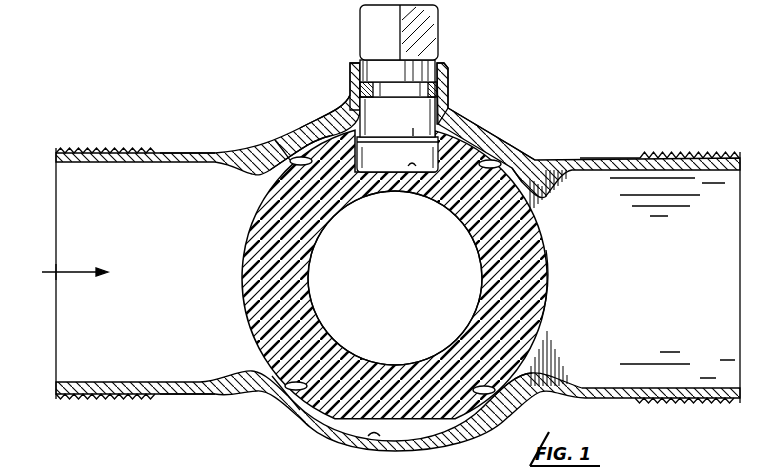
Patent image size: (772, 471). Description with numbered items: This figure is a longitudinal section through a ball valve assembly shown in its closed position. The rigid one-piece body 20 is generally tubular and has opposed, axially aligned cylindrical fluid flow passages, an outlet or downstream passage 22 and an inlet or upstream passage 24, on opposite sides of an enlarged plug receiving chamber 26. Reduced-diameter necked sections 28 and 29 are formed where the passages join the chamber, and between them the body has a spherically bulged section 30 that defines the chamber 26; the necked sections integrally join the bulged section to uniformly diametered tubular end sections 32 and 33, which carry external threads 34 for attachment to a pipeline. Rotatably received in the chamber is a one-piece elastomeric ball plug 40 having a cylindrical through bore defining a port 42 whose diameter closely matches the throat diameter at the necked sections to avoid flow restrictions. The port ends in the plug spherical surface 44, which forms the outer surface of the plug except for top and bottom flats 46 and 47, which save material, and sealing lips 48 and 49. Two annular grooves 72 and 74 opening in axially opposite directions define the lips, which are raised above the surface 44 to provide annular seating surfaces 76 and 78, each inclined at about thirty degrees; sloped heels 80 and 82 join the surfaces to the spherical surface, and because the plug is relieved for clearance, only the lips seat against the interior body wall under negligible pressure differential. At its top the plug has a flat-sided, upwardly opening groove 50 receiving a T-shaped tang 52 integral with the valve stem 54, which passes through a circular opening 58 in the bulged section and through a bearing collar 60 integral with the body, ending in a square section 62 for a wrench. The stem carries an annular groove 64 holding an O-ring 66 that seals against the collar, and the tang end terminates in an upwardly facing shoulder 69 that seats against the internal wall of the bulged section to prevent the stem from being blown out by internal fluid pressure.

The body 20 is at (161, 395).
The fluid flow passage 22 is at (630, 388).
The fluid flow passage 24 is at (56, 380).
The plug receiving cavity or chamber 26 is at (368, 438).
The necked section 28 is at (540, 160).
The necked section 29 is at (253, 150).
The spherically bulged section 30 is at (410, 448).
The tubular end section 32 is at (598, 158).
The tubular end section 33 is at (197, 150).
The external threads 34 is at (103, 147).
The ball plug 40 is at (552, 318).
The port 42 is at (333, 343).
The plug spherical surface 44 is at (549, 296).
The top flat 46 is at (458, 128).
The bottom flat 47 is at (450, 437).
The sealing lip 48 is at (545, 160).
The sealing lip 49 is at (292, 152).
The groove 50 is at (412, 168).
The tang 52 is at (372, 162).
The valve stem 54 is at (440, 63).
The circular opening 58 is at (449, 116).
The bearing collar 60 is at (351, 64).
The square section 62 is at (438, 24).
The annular groove 64 is at (402, 97).
The O-ring 66 is at (440, 88).
The shoulder 69 is at (413, 136).
The annular groove 72 is at (492, 168).
The annular groove 74 is at (298, 168).
The annular seating surface 76 is at (500, 158).
The annular seating surface 78 is at (303, 128).
The sloped heel 80 is at (470, 150).
The sloped heel 82 is at (318, 138).